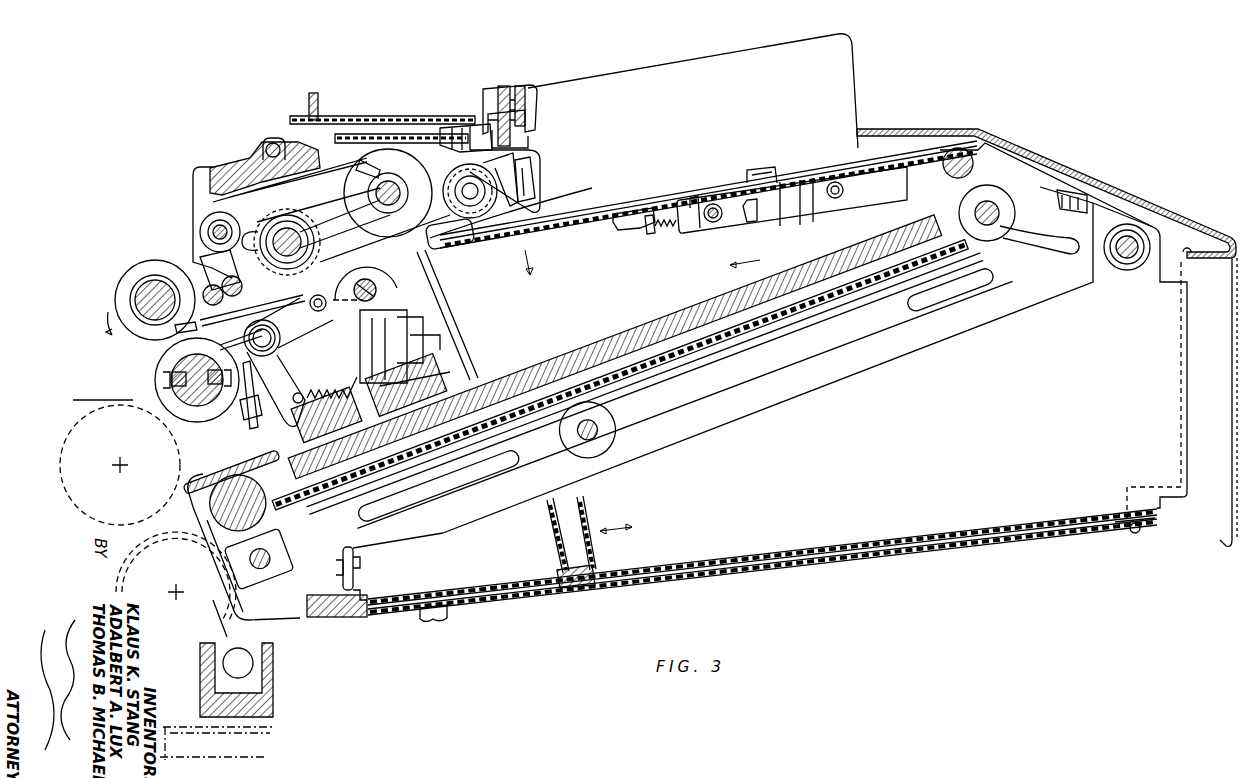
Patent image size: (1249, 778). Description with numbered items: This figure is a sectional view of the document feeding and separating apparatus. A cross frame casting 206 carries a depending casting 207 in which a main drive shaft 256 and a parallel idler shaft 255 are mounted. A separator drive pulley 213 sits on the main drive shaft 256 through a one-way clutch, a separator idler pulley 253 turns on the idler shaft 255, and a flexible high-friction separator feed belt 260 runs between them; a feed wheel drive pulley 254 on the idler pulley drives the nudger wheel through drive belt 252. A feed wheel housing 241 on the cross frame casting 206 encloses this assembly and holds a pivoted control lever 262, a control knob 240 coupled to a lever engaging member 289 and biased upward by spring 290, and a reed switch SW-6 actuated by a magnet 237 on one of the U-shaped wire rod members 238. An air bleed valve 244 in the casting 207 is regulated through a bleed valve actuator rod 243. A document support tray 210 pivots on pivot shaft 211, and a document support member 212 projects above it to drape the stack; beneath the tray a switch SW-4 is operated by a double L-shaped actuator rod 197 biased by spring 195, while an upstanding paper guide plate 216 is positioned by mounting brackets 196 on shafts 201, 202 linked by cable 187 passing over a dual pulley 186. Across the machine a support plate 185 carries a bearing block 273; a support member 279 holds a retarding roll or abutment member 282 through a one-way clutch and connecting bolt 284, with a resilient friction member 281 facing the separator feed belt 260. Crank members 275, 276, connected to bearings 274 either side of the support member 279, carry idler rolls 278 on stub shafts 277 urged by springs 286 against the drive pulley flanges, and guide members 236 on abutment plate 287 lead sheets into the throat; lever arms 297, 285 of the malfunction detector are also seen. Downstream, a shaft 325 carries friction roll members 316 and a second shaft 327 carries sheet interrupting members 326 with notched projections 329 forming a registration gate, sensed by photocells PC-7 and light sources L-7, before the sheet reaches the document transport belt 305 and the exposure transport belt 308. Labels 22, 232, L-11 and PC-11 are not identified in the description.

The support plate 185 is at (614, 347).
The dual pulley 186 is at (775, 183).
The cable 187 is at (790, 200).
The spring 195 is at (665, 234).
The mounting brackets 196 is at (806, 200).
The double L-shaped actuator rod 197 is at (700, 196).
The shaft 201 is at (716, 223).
The shaft 202 is at (843, 196).
The cross frame casting 206 is at (232, 168).
The casting 207 is at (200, 167).
The document support tray 210 is at (570, 228).
The pivot shaft 211 is at (960, 146).
The document support member 212 is at (624, 202).
The separator drive pulley 213 is at (332, 210).
The paper guide plate 216 is at (690, 64).
The link 22 is at (232, 345).
The drum 232 is at (392, 140).
The guide members 236 is at (425, 260).
The magnet 237 is at (522, 200).
The wire rod members 238 is at (205, 218).
The control knob 240 is at (528, 85).
The feed wheel housing 241 is at (541, 157).
The bleed valve actuator rod 243 is at (442, 140).
The air bleed valve 244 is at (205, 228).
The drive belt 252 is at (451, 191).
The separator idler pulley 253 is at (380, 138).
The feed wheel drive pulley 254 is at (370, 166).
The idler shaft 255 is at (388, 202).
The main drive shaft 256 is at (312, 232).
The separator feed belt 260 is at (300, 138).
The control lever 262 is at (462, 128).
The bearing block 273 is at (295, 407).
The bearings 274 is at (284, 346).
The crank member 275 is at (250, 427).
The crank member 276 is at (430, 312).
The stub shafts 277 is at (308, 306).
The idler rolls 278 is at (325, 283).
The support member 279 is at (340, 390).
The friction member 281 is at (426, 280).
The retarding roll or abutment member 282 is at (431, 295).
The connecting bolt 284 is at (365, 279).
The second lever arm 285 is at (432, 331).
The springs 286 is at (329, 423).
The abutment plate 287 is at (446, 351).
The lever engaging member 289 is at (532, 148).
The spring 290 is at (536, 102).
The first lever arm 297 is at (408, 391).
The document transport belt 305 is at (196, 641).
The exposure transport belt 308 is at (95, 396).
The friction roll members 316 is at (145, 275).
The shaft 325 is at (140, 290).
The sheet interrupting members 326 is at (165, 362).
The second shaft 327 is at (165, 378).
The notched projections 329 is at (178, 330).
The light sources L-7 is at (208, 262).
The lever L-11 is at (242, 538).
The photocells PC-7 is at (254, 412).
The pressure contact PC-11 is at (284, 582).
The switch SW-4 is at (634, 232).
The reed switch SW-6 is at (536, 175).